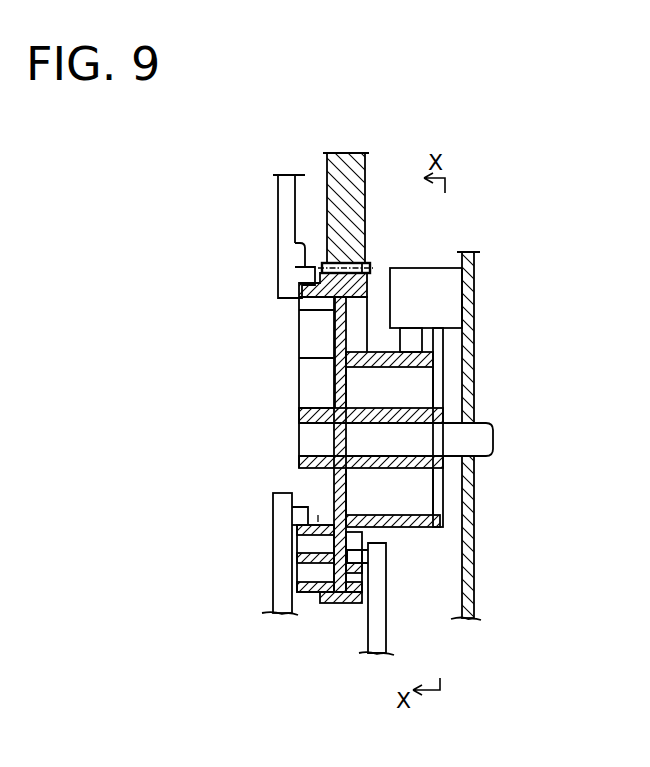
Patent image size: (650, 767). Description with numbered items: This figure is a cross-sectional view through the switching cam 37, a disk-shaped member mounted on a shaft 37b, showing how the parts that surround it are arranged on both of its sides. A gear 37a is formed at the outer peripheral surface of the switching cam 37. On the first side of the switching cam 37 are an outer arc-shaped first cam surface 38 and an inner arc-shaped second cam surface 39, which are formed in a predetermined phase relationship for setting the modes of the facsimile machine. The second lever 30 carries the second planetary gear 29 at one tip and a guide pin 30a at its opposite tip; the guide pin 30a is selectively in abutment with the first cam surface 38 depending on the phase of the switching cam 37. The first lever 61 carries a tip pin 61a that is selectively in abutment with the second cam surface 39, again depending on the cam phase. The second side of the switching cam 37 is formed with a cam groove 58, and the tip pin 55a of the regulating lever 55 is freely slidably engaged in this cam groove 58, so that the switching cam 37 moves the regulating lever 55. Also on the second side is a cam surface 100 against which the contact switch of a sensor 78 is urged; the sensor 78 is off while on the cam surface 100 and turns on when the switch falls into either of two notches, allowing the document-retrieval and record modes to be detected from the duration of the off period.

The second planetary gear 29 is at (349, 147).
The first cam surface 38 is at (319, 262).
The gear 37a is at (368, 266).
The second lever 30 is at (288, 210).
The guide pin 30a is at (298, 247).
The sensor 78 is at (412, 268).
The cam surface 100 is at (428, 352).
The switching cam 37 is at (282, 372).
The shaft 37b is at (473, 447).
The second cam surface 39 is at (320, 520).
The tip pin 61a is at (308, 507).
The first lever 61 is at (273, 566).
The cam groove 58 is at (330, 601).
The tip pin 55a is at (362, 562).
The regulating lever 55 is at (375, 622).